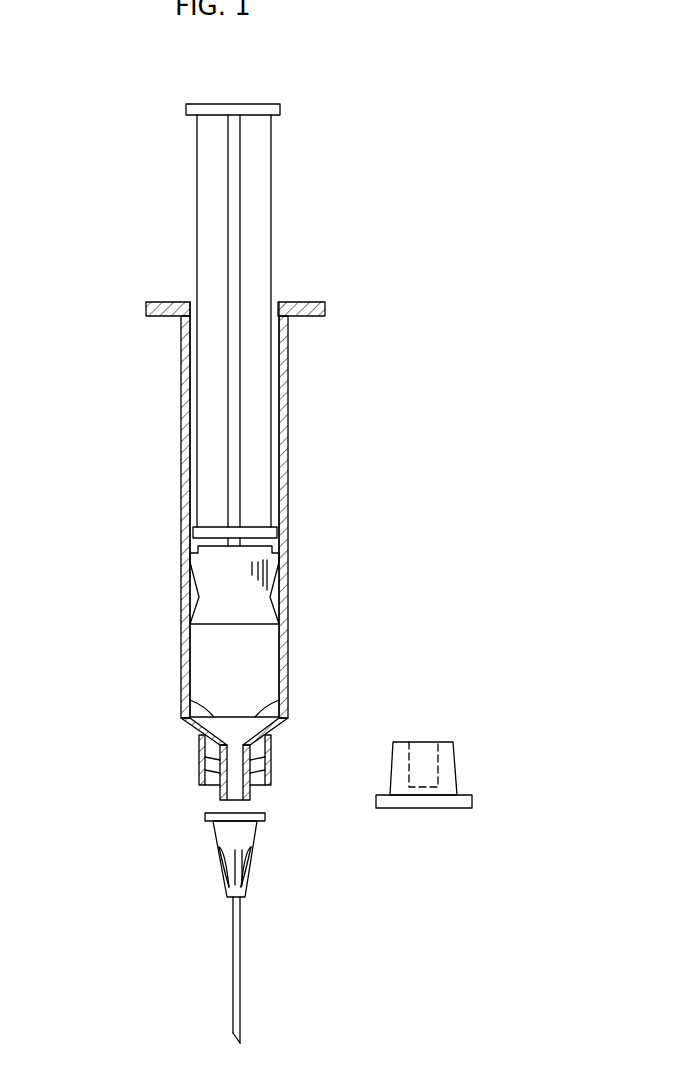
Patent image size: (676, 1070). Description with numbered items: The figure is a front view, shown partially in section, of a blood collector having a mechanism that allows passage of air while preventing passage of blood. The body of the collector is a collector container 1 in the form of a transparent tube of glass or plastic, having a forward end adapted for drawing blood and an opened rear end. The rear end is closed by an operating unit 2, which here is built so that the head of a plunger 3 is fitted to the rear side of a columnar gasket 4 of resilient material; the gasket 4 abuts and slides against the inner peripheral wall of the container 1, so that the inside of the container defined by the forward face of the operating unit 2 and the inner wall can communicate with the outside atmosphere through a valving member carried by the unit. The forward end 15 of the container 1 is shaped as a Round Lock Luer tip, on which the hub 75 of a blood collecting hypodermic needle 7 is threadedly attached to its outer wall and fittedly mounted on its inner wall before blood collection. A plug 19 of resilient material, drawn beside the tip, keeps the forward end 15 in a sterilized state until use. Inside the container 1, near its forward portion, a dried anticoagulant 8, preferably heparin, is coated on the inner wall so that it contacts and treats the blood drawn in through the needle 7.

The collector container 1 is at (285, 444).
The operating unit 2 is at (241, 452).
The plunger 3 is at (257, 266).
The columnar gasket 4 is at (220, 575).
The blood collecting hypodermic needle 7 is at (238, 940).
The anticoagulant (heparin) 8 is at (190, 715).
The forward end (Round Lock Luer tip) 15 is at (200, 765).
The plug 19 is at (437, 776).
The hub 75 is at (213, 843).